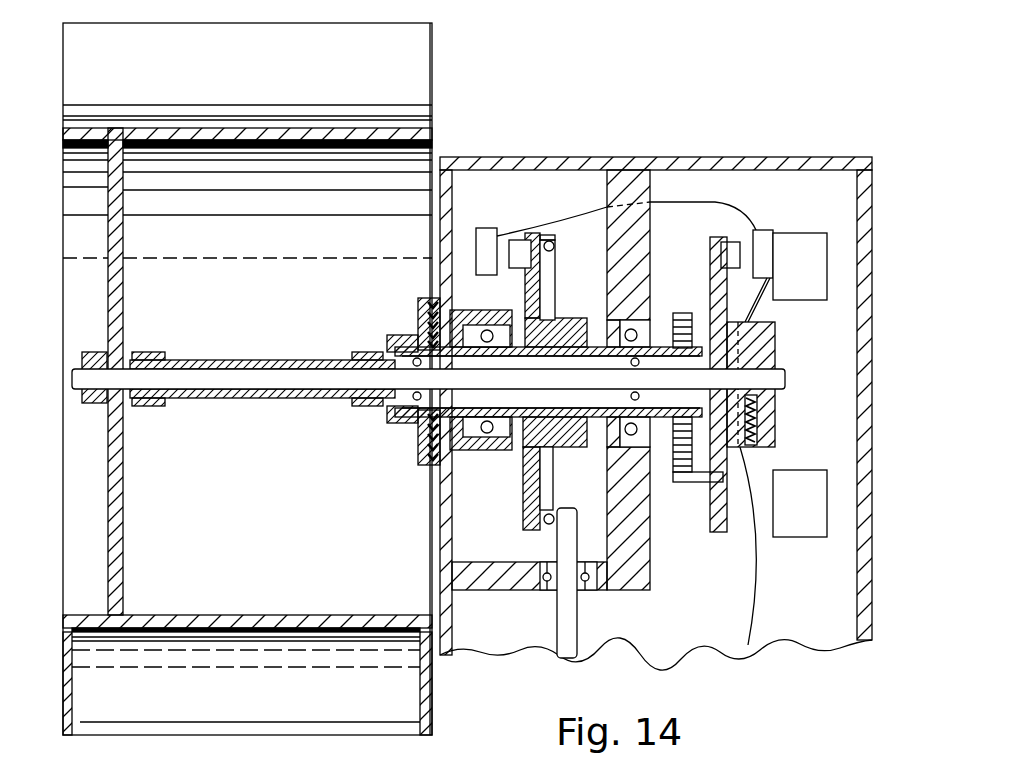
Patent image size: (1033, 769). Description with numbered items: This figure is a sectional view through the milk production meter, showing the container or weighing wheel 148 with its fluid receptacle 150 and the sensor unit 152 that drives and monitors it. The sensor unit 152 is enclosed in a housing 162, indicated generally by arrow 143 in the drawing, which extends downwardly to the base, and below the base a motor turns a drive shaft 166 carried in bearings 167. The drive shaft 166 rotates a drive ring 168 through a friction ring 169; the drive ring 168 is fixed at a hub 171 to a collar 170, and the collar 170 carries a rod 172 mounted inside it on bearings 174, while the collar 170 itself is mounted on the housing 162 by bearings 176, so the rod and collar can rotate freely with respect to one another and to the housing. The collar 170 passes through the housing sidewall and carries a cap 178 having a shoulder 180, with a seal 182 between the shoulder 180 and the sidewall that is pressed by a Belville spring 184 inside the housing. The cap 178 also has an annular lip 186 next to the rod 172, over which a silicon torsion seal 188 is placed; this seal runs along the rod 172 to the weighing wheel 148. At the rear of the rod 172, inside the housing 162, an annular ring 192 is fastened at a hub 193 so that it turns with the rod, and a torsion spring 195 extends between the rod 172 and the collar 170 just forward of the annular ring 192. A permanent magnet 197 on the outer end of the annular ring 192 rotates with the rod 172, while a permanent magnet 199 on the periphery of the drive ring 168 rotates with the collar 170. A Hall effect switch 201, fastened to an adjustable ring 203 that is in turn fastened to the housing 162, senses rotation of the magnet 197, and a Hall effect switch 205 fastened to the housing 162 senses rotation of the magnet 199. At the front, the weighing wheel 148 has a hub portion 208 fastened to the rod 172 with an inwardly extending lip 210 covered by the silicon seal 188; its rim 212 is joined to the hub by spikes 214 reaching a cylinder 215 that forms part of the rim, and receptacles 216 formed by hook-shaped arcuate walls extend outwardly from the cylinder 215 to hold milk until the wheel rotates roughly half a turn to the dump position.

The rotary drive assembly 143 is at (441, 88).
The weighing wheel 148 is at (125, 525).
The fluid receptacle 150 is at (252, 700).
The sensor unit 152 is at (519, 196).
The housing 162 is at (445, 520).
The drive shaft 166 is at (572, 637).
The bearings 167 is at (588, 590).
The drive ring 168 is at (525, 490).
The friction ring 169 is at (549, 524).
The collar 170 is at (600, 300).
The hub 171 is at (557, 290).
The rod 172 is at (786, 379).
The bearings 174 is at (405, 417).
The bearings 176 is at (510, 440).
The cap 178 is at (387, 338).
The shoulder 180 is at (418, 305).
The seal 182 is at (425, 464).
The Belville spring 184 is at (455, 312).
The annular lip 186 is at (372, 401).
The silicon torsion seal 188 is at (295, 360).
The annular ring 192 is at (710, 510).
The hub 193 is at (776, 340).
The torsion spring 195 is at (683, 313).
The permanent magnet 197 is at (730, 242).
The permanent magnet 199 is at (519, 240).
The Hall effect switch 201 is at (763, 230).
The adjustable ring 203 is at (821, 273).
The Hall effect switch 205 is at (497, 202).
The hub portion 208 is at (88, 352).
The lip 210 is at (140, 400).
The rim 212 is at (397, 689).
The spikes 214 is at (125, 285).
The cylinder 215 is at (303, 614).
The receptacles 216 is at (280, 80).